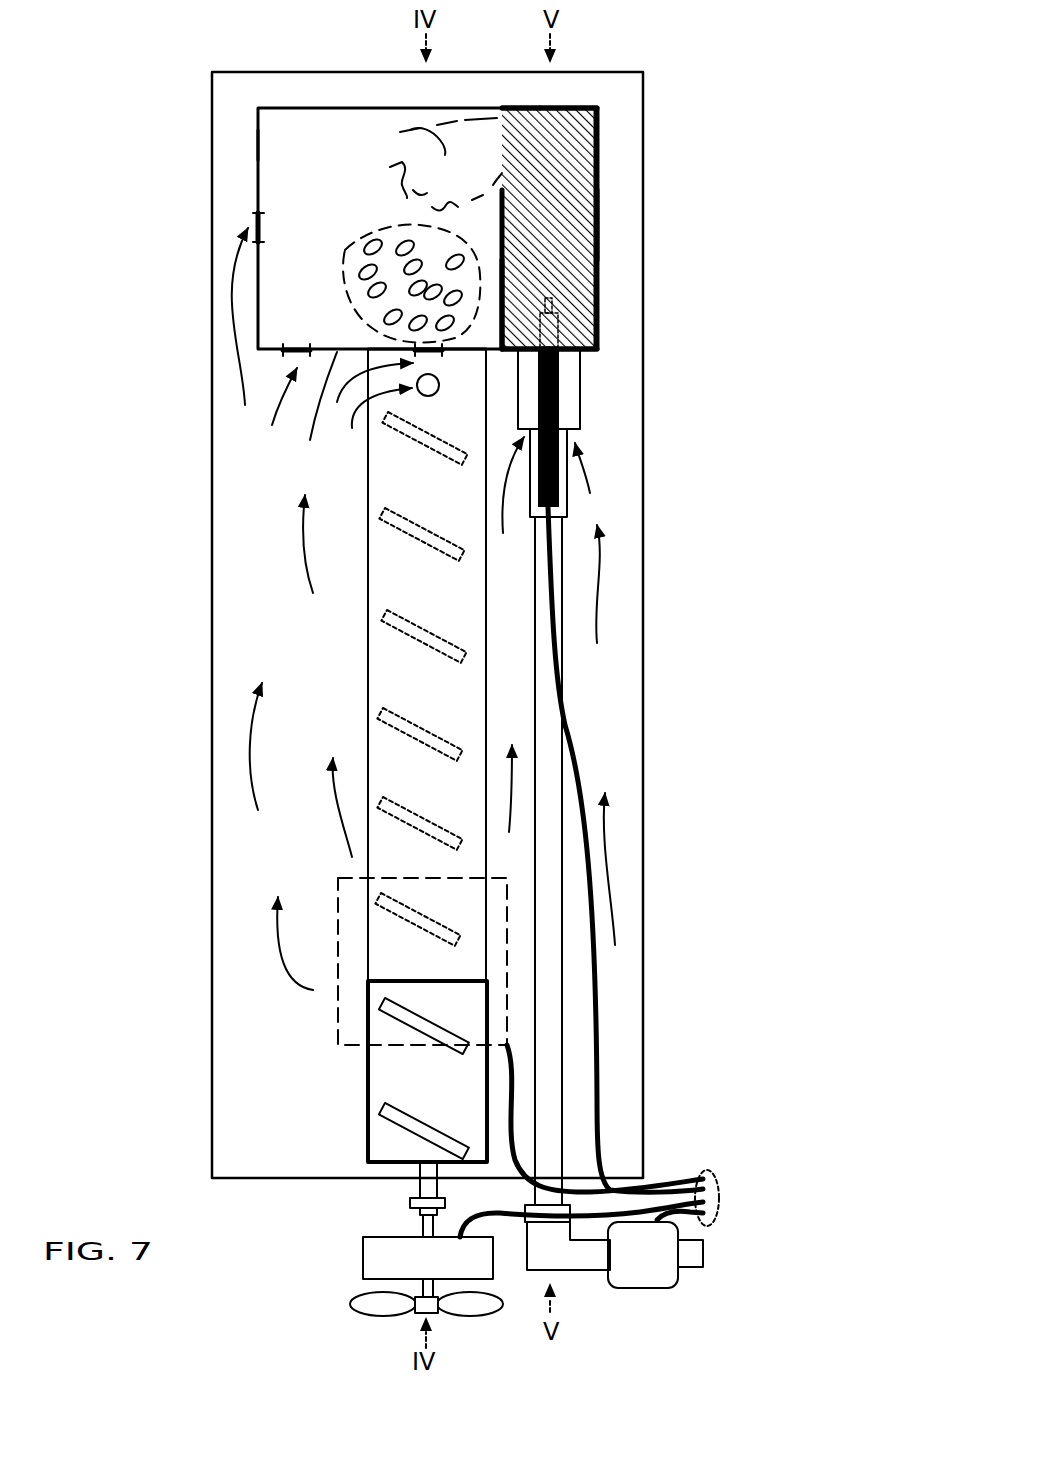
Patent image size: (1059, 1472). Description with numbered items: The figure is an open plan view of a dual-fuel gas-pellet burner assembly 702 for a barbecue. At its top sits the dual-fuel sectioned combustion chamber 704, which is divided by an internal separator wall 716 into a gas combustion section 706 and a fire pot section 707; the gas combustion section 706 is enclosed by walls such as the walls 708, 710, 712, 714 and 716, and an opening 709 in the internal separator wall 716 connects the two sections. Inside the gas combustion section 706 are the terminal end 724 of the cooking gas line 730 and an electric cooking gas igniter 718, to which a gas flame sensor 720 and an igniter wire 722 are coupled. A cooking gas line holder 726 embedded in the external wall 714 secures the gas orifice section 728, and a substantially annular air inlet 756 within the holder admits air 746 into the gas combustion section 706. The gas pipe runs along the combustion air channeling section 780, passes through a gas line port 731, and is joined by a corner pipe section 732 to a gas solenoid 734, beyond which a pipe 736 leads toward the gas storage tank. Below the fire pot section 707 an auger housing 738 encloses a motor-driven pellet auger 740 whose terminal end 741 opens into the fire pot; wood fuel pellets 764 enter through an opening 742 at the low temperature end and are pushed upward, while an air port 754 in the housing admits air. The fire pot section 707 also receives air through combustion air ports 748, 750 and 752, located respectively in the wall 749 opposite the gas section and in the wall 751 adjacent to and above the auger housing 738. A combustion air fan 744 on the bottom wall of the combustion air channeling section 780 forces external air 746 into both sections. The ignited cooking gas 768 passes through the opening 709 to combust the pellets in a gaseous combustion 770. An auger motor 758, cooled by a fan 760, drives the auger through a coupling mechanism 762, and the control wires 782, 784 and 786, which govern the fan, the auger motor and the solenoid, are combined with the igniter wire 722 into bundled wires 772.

The dual-fuel gas-pellet burner assembly 702 is at (107, 190).
The dual-fuel sectioned combustion chamber 704 is at (305, 107).
The gas combustion section 706 is at (607, 187).
The fire pot section 707 is at (250, 115).
The wall 708 is at (567, 162).
The opening 709 is at (505, 138).
The wall 710 is at (550, 107).
The wall 712 is at (597, 222).
The external wall 714 is at (597, 330).
The internal separator wall 716 is at (502, 282).
The cooking gas igniter 718 is at (547, 303).
The gas flame sensor 720 is at (557, 407).
The igniter wire 722 is at (572, 752).
The terminal end 724 is at (570, 333).
The cooking gas line holder 726 is at (580, 385).
The gas orifice section 728 is at (568, 492).
The cooking gas line 730 is at (535, 675).
The gas line port 731 is at (545, 1175).
The corner pipe section 732 is at (598, 1270).
The gas solenoid 734 is at (640, 1290).
The pipe 736 is at (700, 1268).
The auger housing 738 is at (367, 727).
The motor-driven pellet auger 740 is at (403, 630).
The terminal end 741 is at (380, 348).
The opening 742 is at (368, 1140).
The combustion air fan 744 is at (338, 878).
The air 746 is at (300, 553).
The combustion air port 748 is at (258, 225).
The wall 749 is at (258, 145).
The combustion air port 750 is at (292, 348).
The wall 751 is at (317, 412).
The combustion air port 752 is at (430, 352).
The air port 754 is at (438, 380).
The air inlet 756 is at (573, 437).
The auger motor 758 is at (363, 1263).
The fan 760 is at (367, 1297).
The coupling mechanism 762 is at (410, 1203).
The wood fuel pellets 764 is at (380, 233).
The ignited cooking gas 768 is at (410, 133).
The gaseous combustion 770 is at (340, 290).
The bundled wires 772 is at (712, 1172).
The combustion air channeling section 780 is at (248, 597).
The control wire 782 is at (513, 1165).
The control wire 784 is at (500, 1212).
The control wire 786 is at (688, 1217).